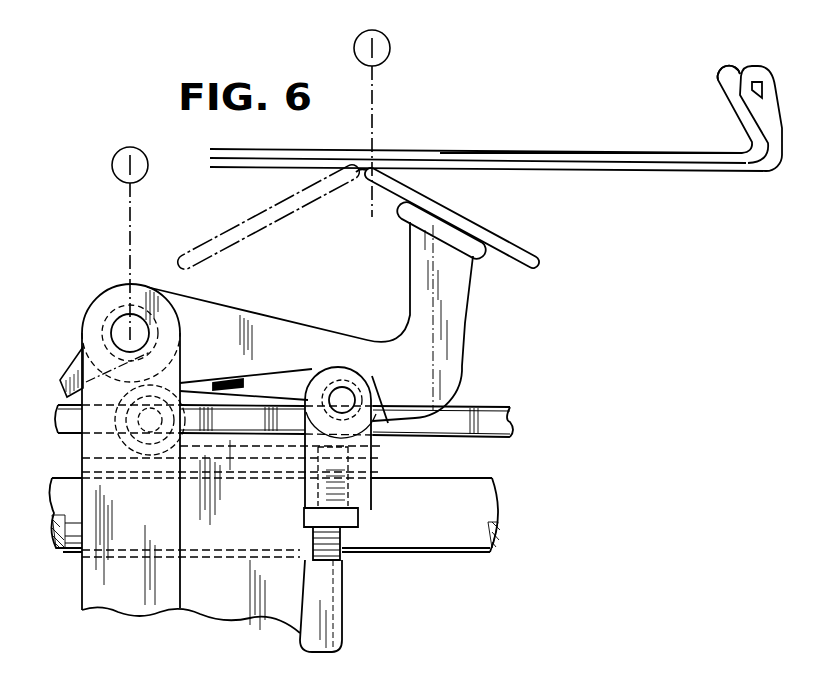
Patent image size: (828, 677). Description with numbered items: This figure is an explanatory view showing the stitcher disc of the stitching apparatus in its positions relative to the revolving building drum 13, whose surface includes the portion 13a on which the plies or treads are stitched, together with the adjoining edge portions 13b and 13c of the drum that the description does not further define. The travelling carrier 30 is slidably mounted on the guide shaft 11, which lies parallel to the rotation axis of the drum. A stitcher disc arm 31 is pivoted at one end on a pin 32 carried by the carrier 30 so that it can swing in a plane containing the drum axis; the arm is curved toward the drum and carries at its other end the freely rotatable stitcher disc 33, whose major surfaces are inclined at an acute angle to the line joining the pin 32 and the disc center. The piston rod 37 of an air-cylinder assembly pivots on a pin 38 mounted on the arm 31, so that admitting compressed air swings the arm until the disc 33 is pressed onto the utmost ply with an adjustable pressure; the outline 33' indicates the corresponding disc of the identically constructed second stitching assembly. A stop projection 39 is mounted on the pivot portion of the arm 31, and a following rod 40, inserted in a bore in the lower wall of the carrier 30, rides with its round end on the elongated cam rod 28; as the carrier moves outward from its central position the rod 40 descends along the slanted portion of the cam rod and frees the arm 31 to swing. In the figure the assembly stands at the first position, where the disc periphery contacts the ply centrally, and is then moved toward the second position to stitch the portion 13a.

The guide shaft 11 is at (70, 553).
The revolving building drum 13 is at (550, 149).
The drum portion 13a is at (626, 153).
The bar bent portion 13b is at (752, 144).
The bar lip 13c is at (718, 80).
The cam rod 28 is at (72, 424).
The travelling carrier 30 is at (170, 583).
The stitcher disc arm 31 is at (462, 331).
The pin 32 is at (118, 314).
The stitcher disc 33 is at (456, 218).
The stitcher disc 33' is at (268, 217).
The piston rod 37 is at (312, 540).
The pin 38 is at (352, 391).
The stop projection 39 is at (70, 374).
The following rod 40 is at (182, 381).